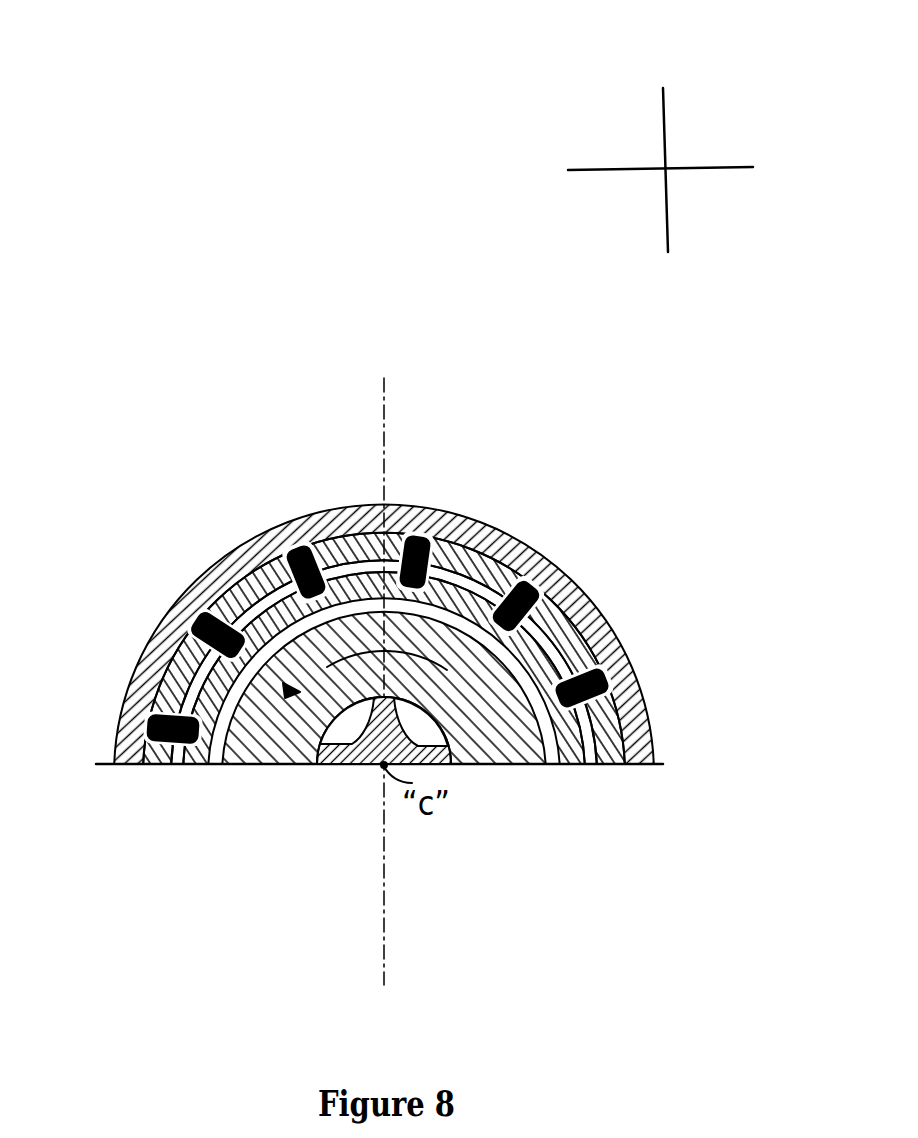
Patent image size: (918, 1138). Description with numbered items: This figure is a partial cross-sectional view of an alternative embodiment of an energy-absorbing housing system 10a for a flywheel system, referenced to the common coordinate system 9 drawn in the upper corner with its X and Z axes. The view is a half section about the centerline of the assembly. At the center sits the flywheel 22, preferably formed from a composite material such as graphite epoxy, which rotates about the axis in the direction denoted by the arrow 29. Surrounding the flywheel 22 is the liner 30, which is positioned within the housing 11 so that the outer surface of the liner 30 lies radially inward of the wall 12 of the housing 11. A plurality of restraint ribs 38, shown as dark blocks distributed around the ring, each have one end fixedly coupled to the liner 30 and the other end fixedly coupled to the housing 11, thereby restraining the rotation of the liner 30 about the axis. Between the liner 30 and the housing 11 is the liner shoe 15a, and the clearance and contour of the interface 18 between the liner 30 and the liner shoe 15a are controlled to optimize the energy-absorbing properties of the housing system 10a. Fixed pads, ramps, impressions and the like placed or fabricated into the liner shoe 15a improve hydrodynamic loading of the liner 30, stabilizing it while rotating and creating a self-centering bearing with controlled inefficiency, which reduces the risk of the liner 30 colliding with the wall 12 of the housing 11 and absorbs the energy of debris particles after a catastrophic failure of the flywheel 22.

The coordinate system 9 is at (747, 103).
The energy-absorbing housing system 10a is at (176, 378).
The housing 11 is at (583, 597).
The wall portion 12 is at (513, 532).
The liner shoe 15a is at (617, 768).
The interface 18 is at (587, 770).
The flywheel 22 is at (507, 767).
The arrow 29 is at (350, 655).
The liner 30 is at (193, 757).
The restraint ribs 38 is at (683, 620).